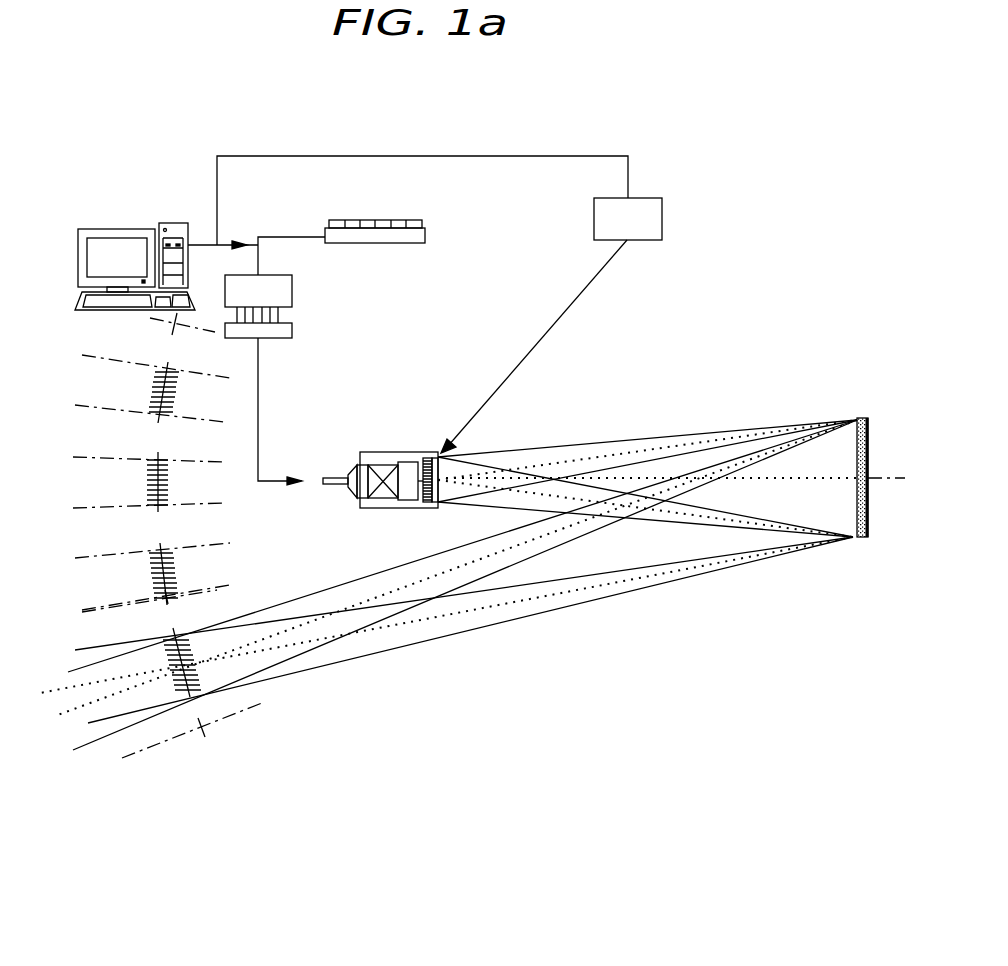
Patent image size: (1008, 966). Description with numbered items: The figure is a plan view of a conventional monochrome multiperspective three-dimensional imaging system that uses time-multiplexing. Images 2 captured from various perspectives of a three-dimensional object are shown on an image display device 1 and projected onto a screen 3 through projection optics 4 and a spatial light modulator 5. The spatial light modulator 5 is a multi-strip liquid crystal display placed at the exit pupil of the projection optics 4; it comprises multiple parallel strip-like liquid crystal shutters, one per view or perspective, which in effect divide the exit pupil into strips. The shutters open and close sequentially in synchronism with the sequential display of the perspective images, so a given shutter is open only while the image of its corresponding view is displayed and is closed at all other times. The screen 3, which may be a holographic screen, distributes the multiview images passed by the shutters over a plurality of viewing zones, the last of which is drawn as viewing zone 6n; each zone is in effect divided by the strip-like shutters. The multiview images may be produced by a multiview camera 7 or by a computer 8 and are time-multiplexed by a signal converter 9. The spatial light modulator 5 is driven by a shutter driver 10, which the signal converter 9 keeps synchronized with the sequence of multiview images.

The image display device 1 is at (351, 463).
The images 2 is at (361, 458).
The screen 3 is at (868, 431).
The projection optics 4 is at (408, 458).
The spatial light modulator 5 is at (440, 466).
The viewing zone 6n is at (167, 535).
The multiview camera 7 is at (420, 236).
The computer 8 is at (113, 247).
The signal converter 9 is at (277, 295).
The shutter driver 10 is at (660, 217).